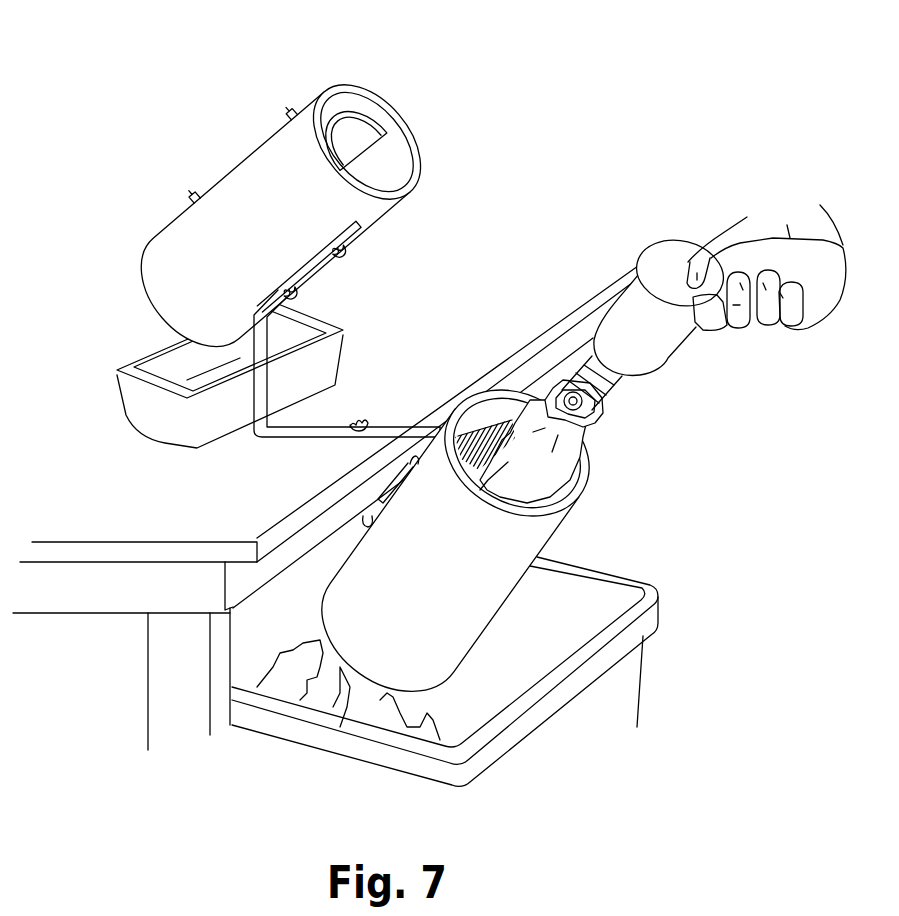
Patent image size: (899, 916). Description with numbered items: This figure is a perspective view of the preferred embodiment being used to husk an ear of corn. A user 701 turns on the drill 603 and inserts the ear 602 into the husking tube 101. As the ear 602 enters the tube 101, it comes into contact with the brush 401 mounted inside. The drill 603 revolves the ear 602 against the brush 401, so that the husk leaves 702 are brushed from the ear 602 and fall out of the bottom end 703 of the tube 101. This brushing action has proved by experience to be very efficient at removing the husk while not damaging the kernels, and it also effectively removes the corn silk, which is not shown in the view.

The husking tube 101 is at (580, 491).
The brush 401 is at (481, 430).
The ear 602 is at (563, 446).
The drill 603 is at (637, 308).
The user 701 is at (757, 220).
The husk leaves 702 is at (420, 712).
The bottom end 703 is at (367, 677).